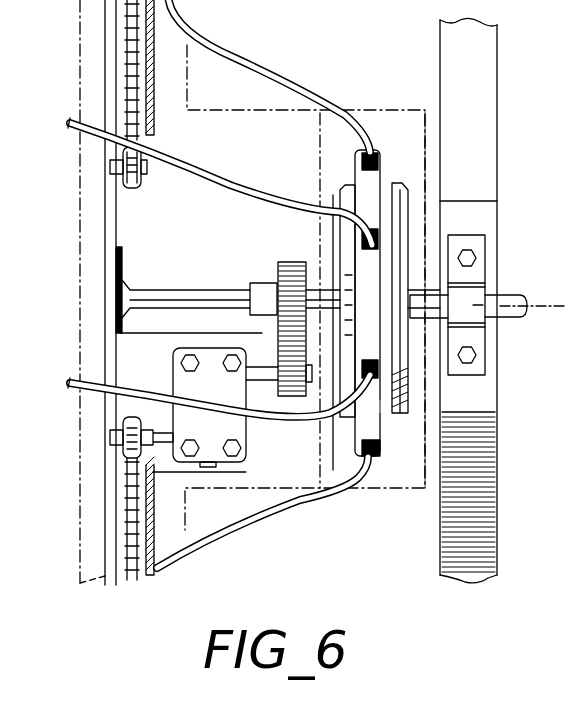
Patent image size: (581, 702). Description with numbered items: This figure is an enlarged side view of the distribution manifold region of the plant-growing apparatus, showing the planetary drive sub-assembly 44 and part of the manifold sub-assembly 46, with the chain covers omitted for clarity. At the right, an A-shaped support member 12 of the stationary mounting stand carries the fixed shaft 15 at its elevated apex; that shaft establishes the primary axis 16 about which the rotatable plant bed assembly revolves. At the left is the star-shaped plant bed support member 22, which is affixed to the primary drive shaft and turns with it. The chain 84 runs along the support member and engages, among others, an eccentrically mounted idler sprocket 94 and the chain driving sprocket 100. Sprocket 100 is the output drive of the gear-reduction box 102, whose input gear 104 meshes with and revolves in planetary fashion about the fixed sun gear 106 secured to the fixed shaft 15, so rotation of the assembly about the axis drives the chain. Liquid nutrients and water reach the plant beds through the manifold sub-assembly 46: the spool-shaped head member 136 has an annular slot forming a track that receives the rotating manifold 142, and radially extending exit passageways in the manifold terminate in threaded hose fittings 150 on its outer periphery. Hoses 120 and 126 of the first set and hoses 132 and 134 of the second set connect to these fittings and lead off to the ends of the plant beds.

The A-shaped support member 12 is at (497, 549).
The fixed shaft 15 is at (513, 295).
The primary axis 16 is at (554, 312).
The plant bed support member 22 is at (110, 298).
The planetary drive sub-assembly 44 is at (76, 480).
The manifold sub-assembly 46 is at (400, 110).
The chain 84 is at (140, 165).
The idler sprocket 94 is at (130, 188).
The chain driving sprocket 100 is at (122, 418).
The gear-reduction box 102 is at (178, 364).
The input gear 104 is at (288, 398).
The sun gear 106 is at (288, 262).
The hose 120 is at (264, 55).
The hose 126 is at (205, 532).
The hose 132 is at (282, 424).
The hose 134 is at (220, 172).
The head member 136 is at (340, 190).
The rotating manifold 142 is at (405, 172).
The hose fitting 150 is at (380, 160).